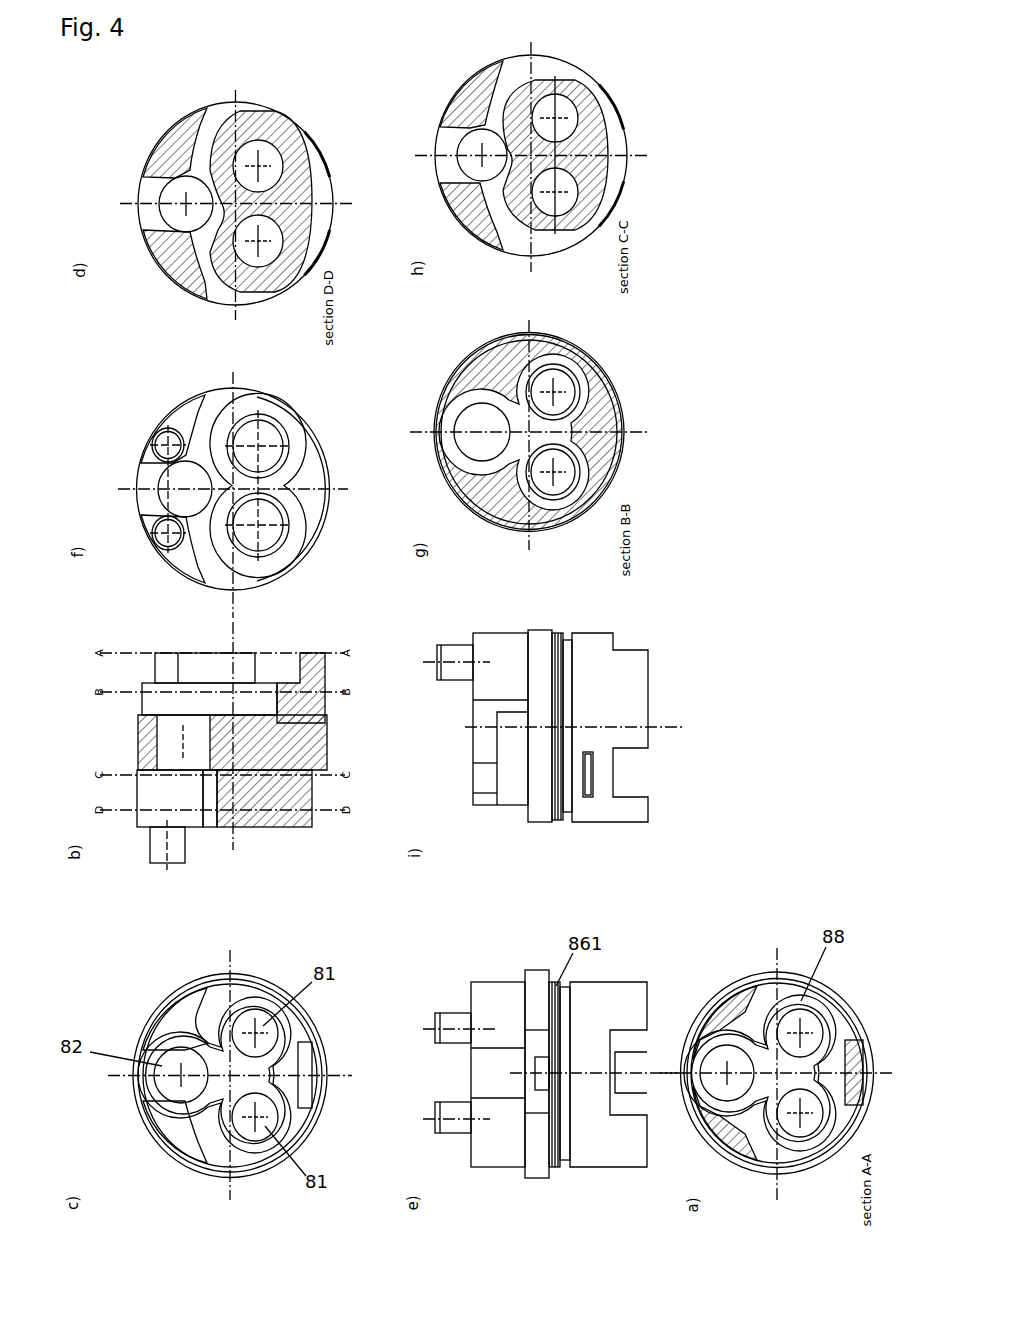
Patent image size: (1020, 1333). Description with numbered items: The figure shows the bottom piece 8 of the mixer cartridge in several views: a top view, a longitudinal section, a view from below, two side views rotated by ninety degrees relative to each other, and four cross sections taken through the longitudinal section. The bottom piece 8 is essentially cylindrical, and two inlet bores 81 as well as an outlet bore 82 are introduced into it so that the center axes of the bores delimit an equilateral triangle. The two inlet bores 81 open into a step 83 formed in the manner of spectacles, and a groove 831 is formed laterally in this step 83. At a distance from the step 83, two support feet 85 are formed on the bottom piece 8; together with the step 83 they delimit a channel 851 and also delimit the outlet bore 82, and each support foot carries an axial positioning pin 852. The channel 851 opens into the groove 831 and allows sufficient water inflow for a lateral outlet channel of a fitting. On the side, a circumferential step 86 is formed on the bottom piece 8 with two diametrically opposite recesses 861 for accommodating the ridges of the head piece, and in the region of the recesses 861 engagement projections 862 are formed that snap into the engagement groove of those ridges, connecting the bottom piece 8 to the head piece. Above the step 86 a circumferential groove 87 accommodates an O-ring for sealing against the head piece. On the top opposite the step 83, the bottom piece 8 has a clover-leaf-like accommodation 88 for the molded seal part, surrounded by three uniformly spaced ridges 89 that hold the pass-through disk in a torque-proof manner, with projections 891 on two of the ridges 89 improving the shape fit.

The bottom piece 8 is at (92, 984).
The inlet bores 81 is at (566, 108).
The outlet bore 82 is at (473, 148).
The step 83 is at (296, 556).
The groove 831 is at (510, 790).
The support feet 85 is at (168, 417).
The channel 851 is at (238, 103).
The axial positioning pin 852 is at (448, 1018).
The step 86 is at (450, 385).
The recesses 861 is at (137, 176).
The engagement projections 862 is at (135, 766).
The groove 87 is at (563, 1160).
The accommodation 88 is at (620, 376).
The ridges 89 is at (185, 1002).
The projections 891 is at (165, 1128).